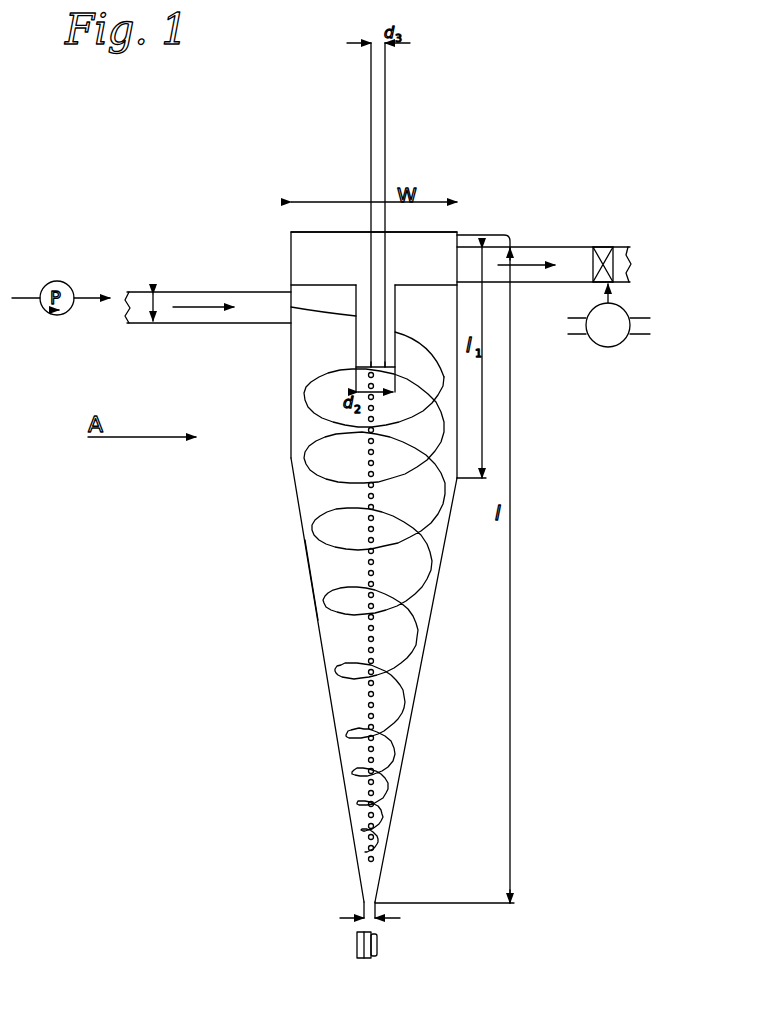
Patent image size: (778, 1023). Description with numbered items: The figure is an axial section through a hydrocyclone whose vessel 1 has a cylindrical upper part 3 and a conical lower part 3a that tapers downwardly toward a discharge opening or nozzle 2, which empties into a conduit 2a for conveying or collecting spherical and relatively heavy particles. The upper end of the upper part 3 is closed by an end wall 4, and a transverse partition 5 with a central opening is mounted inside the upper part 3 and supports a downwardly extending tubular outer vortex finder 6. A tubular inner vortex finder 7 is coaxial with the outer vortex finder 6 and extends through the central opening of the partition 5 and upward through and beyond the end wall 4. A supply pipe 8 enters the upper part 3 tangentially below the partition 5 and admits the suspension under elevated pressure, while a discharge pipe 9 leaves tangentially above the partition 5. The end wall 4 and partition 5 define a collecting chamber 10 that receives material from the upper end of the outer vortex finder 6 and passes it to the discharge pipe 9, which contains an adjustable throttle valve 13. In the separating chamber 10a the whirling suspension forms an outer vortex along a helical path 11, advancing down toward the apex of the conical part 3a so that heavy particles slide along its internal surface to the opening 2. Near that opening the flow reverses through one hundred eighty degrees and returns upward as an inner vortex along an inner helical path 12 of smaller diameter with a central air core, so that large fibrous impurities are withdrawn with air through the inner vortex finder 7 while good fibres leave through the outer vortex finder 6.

The vessel 1 is at (387, 567).
The discharge opening or nozzle 2 is at (364, 908).
The conduit 2a is at (380, 946).
The upper part 3 is at (458, 392).
The conical lower part 3a is at (412, 730).
The end wall 4 is at (348, 224).
The transverse partition 5 is at (444, 300).
The outer vortex finder 6 is at (396, 352).
The inner vortex finder 7 is at (385, 136).
The supply pipe 8 is at (227, 325).
The discharge pipe 9 is at (570, 246).
The collecting chamber 10 is at (300, 263).
The separating chamber 10a is at (318, 582).
The helical path 11 is at (316, 546).
The inner helical path 12 is at (363, 767).
The throttle valve 13 is at (598, 240).